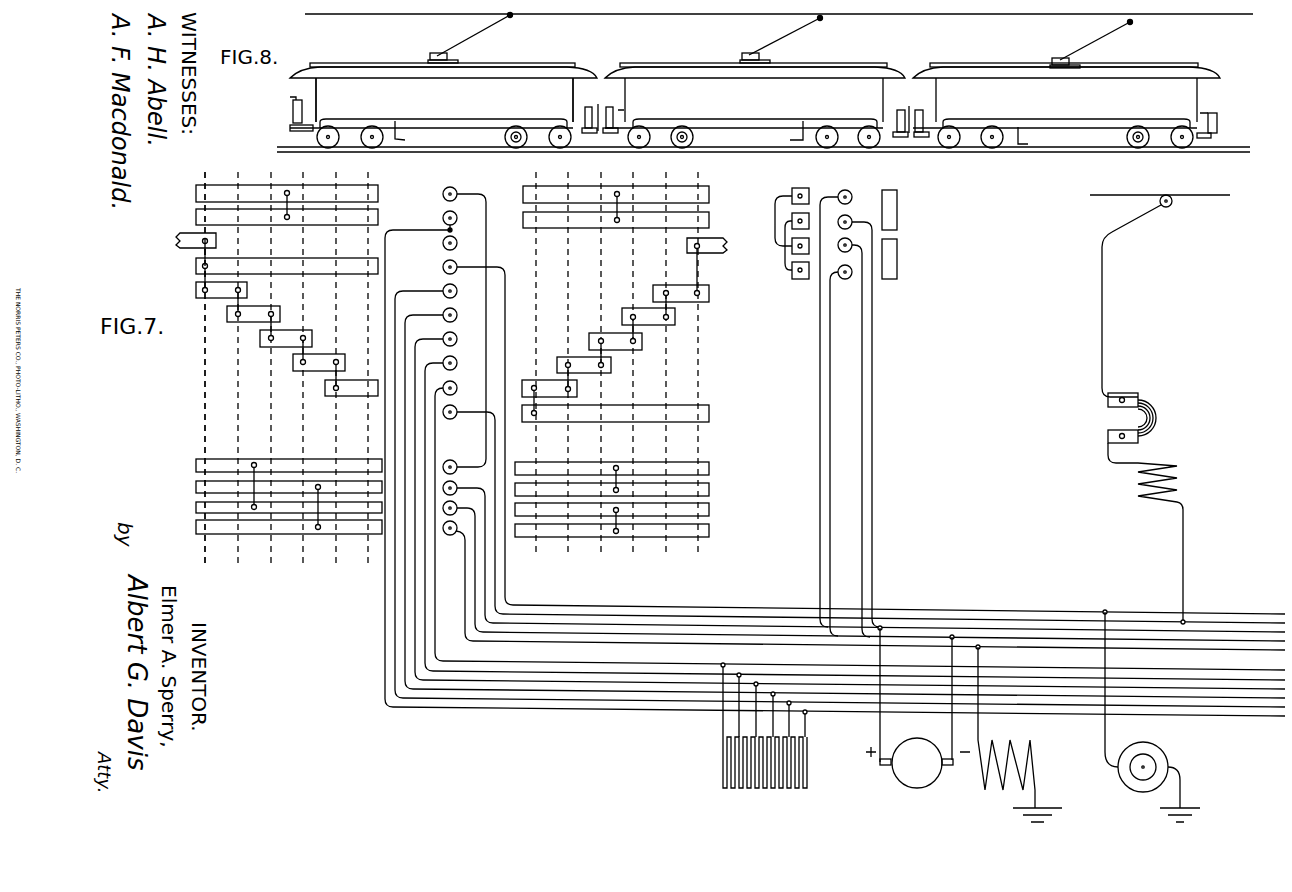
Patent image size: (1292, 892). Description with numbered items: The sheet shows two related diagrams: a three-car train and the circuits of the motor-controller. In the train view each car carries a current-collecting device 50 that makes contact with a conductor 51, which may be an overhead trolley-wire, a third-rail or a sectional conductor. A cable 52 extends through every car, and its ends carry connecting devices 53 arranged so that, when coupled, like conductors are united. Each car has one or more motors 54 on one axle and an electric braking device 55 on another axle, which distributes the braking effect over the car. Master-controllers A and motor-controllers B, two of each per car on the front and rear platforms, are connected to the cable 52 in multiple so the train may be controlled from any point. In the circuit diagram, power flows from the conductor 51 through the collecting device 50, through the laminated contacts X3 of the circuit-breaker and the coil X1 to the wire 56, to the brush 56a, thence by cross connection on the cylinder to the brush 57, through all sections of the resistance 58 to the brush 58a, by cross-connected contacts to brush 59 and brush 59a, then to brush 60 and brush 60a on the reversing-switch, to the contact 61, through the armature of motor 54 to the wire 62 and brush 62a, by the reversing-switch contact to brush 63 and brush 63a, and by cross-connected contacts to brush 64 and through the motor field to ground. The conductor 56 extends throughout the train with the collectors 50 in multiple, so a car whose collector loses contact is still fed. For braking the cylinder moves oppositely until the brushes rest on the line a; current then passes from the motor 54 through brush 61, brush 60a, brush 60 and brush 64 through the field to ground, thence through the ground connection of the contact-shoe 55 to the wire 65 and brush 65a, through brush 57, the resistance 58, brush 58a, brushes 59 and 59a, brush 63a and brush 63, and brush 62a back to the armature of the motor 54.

In FIG. 8, the current-collecting device 50 is at (1100, 37).
In FIG. 7, the current-collecting device 50 is at (1142, 296).
In FIG. 8, the conductor 51 is at (622, 17).
In FIG. 7, the conductor 51 is at (1143, 194).
In FIG. 8, the cable 52 is at (440, 119).
In FIG. 8, the connecting devices 53 is at (909, 108).
In FIG. 8, the motor 54 is at (725, 136).
In FIG. 7, the motor 54 is at (918, 714).
In FIG. 8, the electric braking device 55 is at (694, 137).
In FIG. 7, the electric braking device 55 is at (1137, 716).
In FIG. 7, the wire 56 is at (1153, 612).
In FIG. 7, the brush 56a is at (864, 514).
In FIG. 7, the brush 57 is at (860, 523).
In FIG. 7, the resistance 58 is at (735, 760).
In FIG. 7, the brush 58a is at (835, 462).
In FIG. 7, the brush 59 is at (445, 325).
In FIG. 7, the brush 59a is at (463, 459).
In FIG. 7, the brush 60 is at (864, 553).
In FIG. 7, the brush 60a is at (852, 402).
In FIG. 7, the contact 61 is at (859, 415).
In FIG. 7, the wire 62 is at (965, 630).
In FIG. 7, the brush 62a is at (843, 434).
In FIG. 7, the brush 63 is at (842, 450).
In FIG. 7, the brush 63a is at (864, 567).
In FIG. 7, the brush 64 is at (861, 585).
In FIG. 7, the wire 65 is at (1070, 612).
In FIG. 7, the brush 65a is at (844, 435).
In FIG. 7, the coil X1 is at (1157, 532).
In FIG. 7, the laminated contacts X3 is at (1144, 418).
In FIG. 7, the line a a is at (286, 371).
In FIG. 8, the master-controller A is at (1208, 115).
In FIG. 8, the motor-controller B is at (1211, 136).